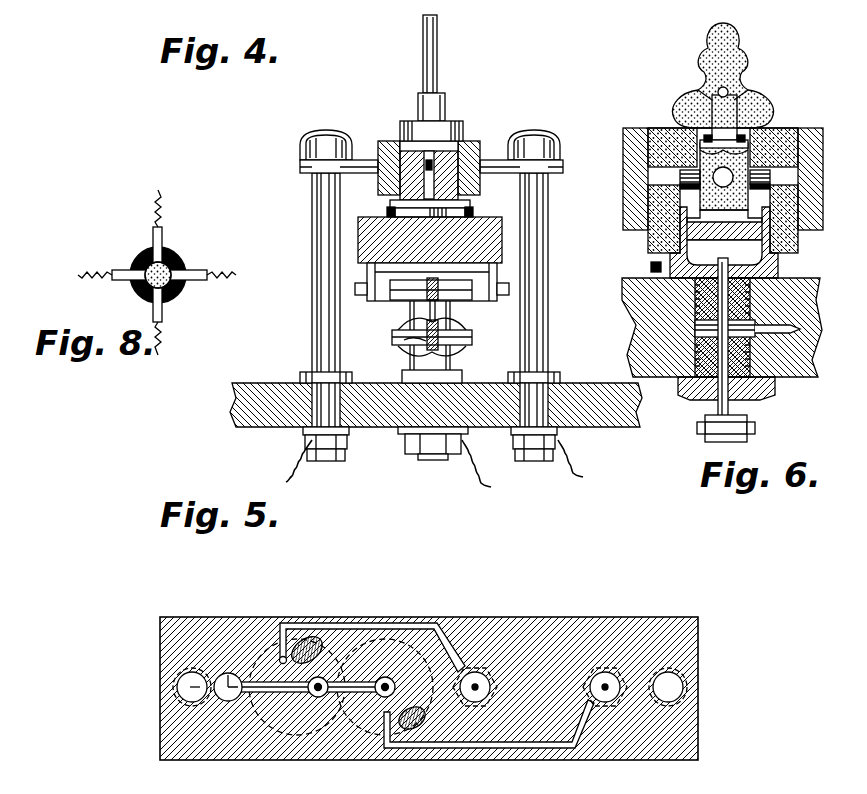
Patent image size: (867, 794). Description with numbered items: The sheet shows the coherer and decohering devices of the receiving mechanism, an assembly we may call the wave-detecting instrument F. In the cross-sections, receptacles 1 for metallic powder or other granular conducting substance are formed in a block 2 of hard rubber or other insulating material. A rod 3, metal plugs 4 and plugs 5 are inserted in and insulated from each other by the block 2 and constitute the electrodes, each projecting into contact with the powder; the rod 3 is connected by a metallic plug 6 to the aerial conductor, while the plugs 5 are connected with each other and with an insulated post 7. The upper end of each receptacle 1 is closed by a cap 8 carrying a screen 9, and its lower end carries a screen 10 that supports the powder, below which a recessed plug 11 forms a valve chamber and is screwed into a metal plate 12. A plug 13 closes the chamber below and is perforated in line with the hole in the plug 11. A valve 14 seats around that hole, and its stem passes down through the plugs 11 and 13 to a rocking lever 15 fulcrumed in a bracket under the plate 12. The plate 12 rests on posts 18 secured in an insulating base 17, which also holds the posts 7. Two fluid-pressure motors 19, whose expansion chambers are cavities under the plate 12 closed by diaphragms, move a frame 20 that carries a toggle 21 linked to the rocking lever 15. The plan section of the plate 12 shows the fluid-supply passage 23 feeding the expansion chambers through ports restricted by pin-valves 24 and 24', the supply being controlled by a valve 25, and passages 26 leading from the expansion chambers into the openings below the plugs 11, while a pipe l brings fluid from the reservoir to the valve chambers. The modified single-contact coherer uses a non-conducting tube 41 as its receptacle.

In FIG. 4, the fixture F is at (377, 85).
In FIG. 8, the receptacle 1 is at (158, 275).
In FIG. 6, the receptacle 1 is at (724, 176).
In FIG. 4, the block 2 is at (398, 142).
In FIG. 6, the block 2 is at (640, 135).
In FIG. 4, the rod 3 is at (378, 152).
In FIG. 8, the rod 3 is at (153, 232).
In FIG. 8, the metal plug 4 is at (153, 311).
In FIG. 8, the plug 5 is at (122, 270).
In FIG. 6, the plug 5 is at (675, 132).
In FIG. 4, the metallic plug 6 is at (418, 120).
In FIG. 4, the insulated post 7 is at (312, 241).
In FIG. 6, the cap 8 is at (745, 104).
In FIG. 6, the screen 9 is at (725, 133).
In FIG. 6, the screen 10 is at (798, 247).
In FIG. 4, the recessed plug 11 is at (466, 211).
In FIG. 6, the recessed plug 11 is at (780, 268).
In FIG. 4, the metal plate 12 is at (430, 240).
In FIG. 6, the metal plate 12 is at (640, 322).
In FIG. 5, the metal plate 12 is at (449, 625).
In FIG. 6, the plug 13 is at (778, 395).
In FIG. 5, the plug 13 is at (480, 670).
In FIG. 6, the valve 14 is at (650, 247).
In FIG. 4, the rocking lever 15 is at (395, 300).
In FIG. 6, the rocking lever 15 is at (757, 430).
In FIG. 4, the insulating base 17 is at (236, 402).
In FIG. 4, the post 18 is at (452, 364).
In FIG. 5, the post 18 is at (178, 687).
In FIG. 5, the fluid-pressure motor 19 is at (311, 640).
In FIG. 4, the frame 20 is at (468, 331).
In FIG. 4, the toggle 21 is at (410, 346).
In FIG. 5, the fluid-supply passage 23 is at (285, 737).
In FIG. 5, the pin-valve 24 is at (318, 733).
In FIG. 5, the hole 24' is at (381, 733).
In FIG. 5, the valve 25 is at (234, 674).
In FIG. 6, the passage 26 is at (775, 328).
In FIG. 5, the passage 26 is at (378, 626).
In FIG. 8, the tube 41 is at (184, 292).
In FIG. 4, the pipe l is at (387, 212).
In FIG. 6, the pipe l is at (651, 268).